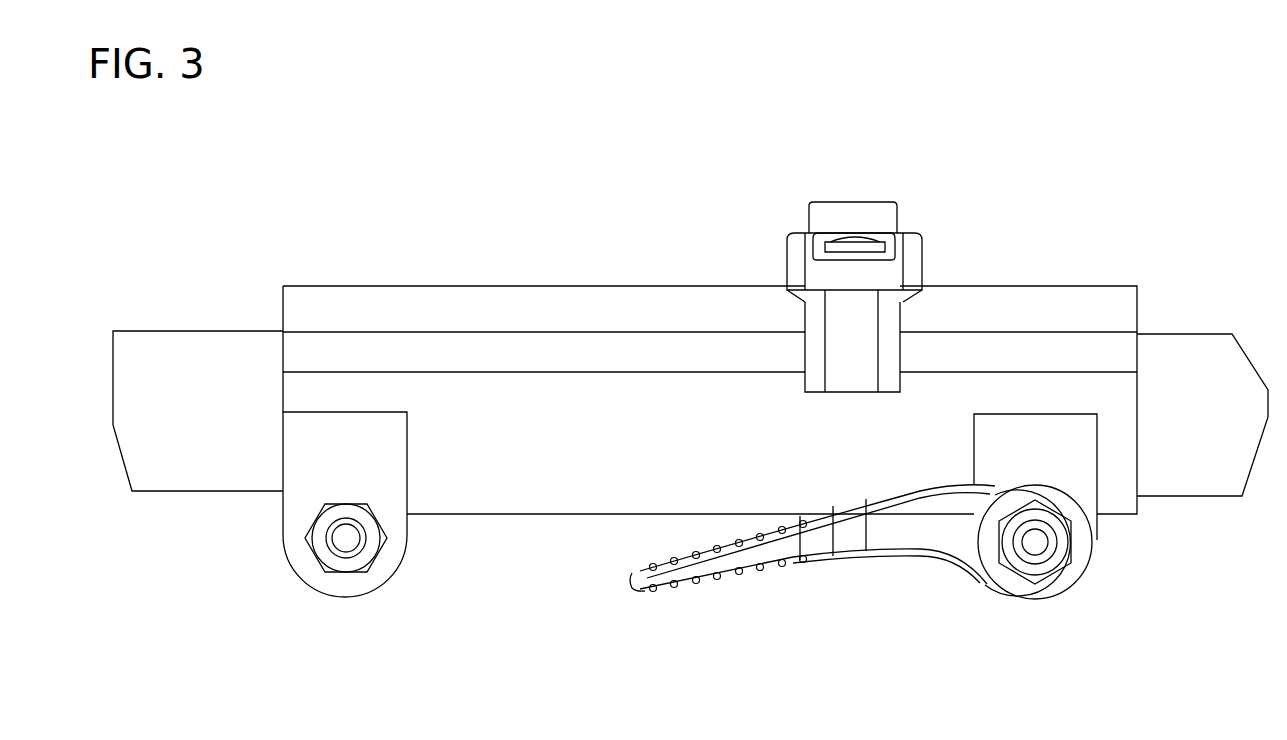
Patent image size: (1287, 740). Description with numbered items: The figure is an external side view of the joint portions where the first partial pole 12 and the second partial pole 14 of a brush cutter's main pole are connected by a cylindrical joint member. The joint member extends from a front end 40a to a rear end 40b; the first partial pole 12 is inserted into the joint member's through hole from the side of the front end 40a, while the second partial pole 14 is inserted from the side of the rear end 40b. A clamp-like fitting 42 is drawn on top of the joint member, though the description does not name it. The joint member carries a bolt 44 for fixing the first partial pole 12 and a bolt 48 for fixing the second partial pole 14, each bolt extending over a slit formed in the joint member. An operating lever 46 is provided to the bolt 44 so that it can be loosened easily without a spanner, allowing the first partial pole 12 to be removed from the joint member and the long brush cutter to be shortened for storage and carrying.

The first partial pole 12 is at (1216, 334).
The second partial pole 14 is at (152, 331).
The front end 40a is at (1137, 308).
The rear end 40b is at (283, 306).
The clamp 42 is at (856, 201).
The bolt 44 is at (1030, 568).
The operating lever 46 is at (768, 567).
The bolt 48 is at (345, 568).